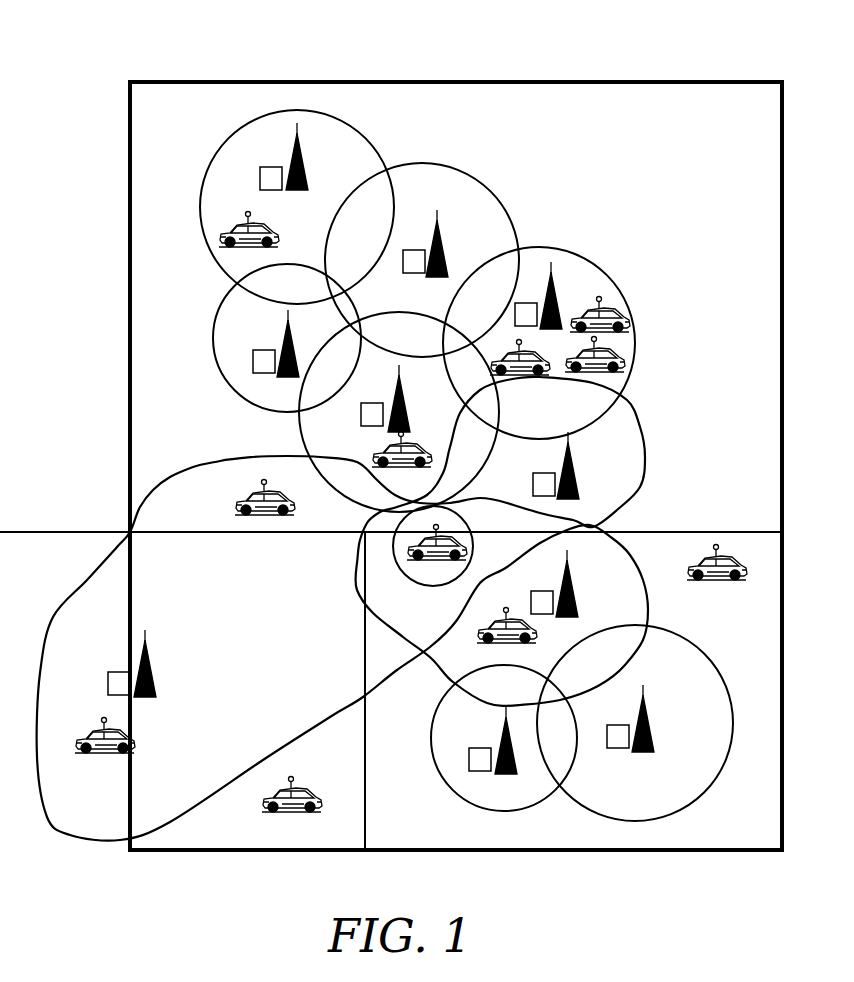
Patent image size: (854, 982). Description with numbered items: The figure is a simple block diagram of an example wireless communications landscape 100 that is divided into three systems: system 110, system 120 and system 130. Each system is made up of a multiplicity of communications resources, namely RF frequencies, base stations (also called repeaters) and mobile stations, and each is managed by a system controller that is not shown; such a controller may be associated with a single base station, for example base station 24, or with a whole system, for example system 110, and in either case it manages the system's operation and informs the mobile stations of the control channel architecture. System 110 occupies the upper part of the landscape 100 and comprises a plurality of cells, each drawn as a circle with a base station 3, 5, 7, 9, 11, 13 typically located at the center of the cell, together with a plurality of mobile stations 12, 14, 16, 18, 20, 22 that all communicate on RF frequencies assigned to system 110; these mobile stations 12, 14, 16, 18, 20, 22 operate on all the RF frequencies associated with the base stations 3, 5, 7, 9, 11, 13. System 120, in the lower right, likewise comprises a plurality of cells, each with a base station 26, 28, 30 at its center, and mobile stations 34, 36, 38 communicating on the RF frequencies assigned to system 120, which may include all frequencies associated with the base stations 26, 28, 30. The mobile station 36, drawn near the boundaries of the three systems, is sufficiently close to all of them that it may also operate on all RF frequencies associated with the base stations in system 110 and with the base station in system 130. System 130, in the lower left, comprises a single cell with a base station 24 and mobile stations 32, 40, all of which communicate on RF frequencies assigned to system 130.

The wireless communications landscape 100 is at (801, 40).
The system 110 is at (772, 526).
The system 120 is at (775, 841).
The system 130 is at (355, 841).
The base station 3 is at (303, 150).
The base station 5 is at (283, 331).
The base station 7 is at (403, 396).
The base station 9 is at (555, 290).
The base station 11 is at (440, 226).
The base station 13 is at (575, 458).
The base station 24 is at (157, 659).
The base station 26 is at (577, 579).
The base station 28 is at (652, 703).
The base station 30 is at (498, 732).
The mobile station 12 is at (632, 318).
The mobile station 14 is at (524, 356).
The mobile station 16 is at (383, 447).
The mobile station 18 is at (250, 226).
The mobile station 20 is at (240, 499).
The mobile station 22 is at (632, 360).
The mobile station 32 is at (311, 795).
The mobile station 34 is at (716, 558).
The mobile station 36 is at (418, 558).
The mobile station 38 is at (498, 612).
The mobile station 40 is at (85, 729).